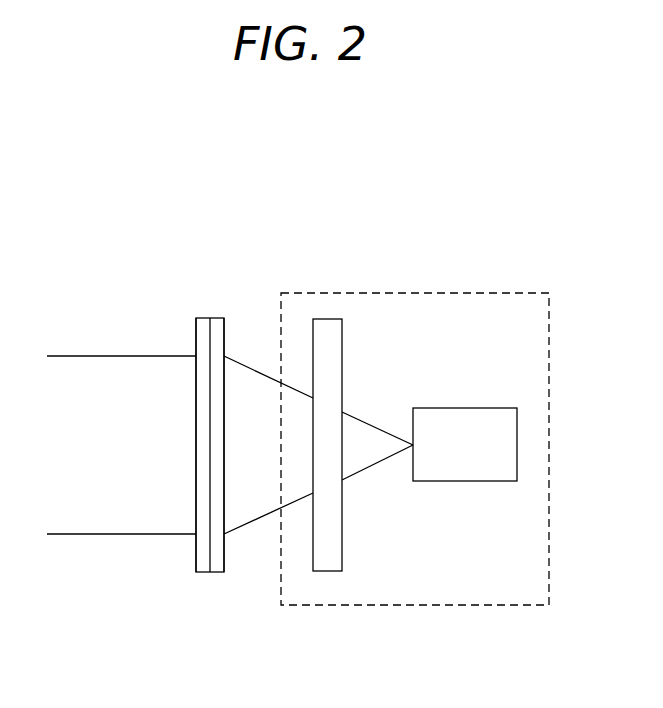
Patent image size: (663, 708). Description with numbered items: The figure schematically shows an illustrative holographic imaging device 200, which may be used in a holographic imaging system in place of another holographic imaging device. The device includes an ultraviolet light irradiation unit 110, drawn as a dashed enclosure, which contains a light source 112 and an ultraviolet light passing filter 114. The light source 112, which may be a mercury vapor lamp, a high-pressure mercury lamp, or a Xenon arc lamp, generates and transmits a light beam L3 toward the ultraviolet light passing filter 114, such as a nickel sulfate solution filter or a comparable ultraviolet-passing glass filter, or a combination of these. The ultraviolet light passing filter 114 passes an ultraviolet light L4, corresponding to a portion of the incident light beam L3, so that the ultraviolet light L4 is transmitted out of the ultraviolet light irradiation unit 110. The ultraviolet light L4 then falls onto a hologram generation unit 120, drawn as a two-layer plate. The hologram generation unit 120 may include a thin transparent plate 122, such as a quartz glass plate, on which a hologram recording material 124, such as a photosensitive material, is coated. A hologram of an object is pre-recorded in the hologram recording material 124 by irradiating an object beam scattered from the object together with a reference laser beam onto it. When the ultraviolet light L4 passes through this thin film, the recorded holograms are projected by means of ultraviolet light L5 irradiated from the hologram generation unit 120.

The holographic imaging device 200 is at (470, 166).
The ultraviolet light irradiation unit 110 is at (495, 292).
The light source 112 is at (473, 483).
The ultraviolet light passing filter 114 is at (342, 360).
The hologram generation unit 120 is at (188, 306).
The thin transparent plate 122 is at (205, 568).
The hologram recording material 124 is at (215, 568).
The light beam L3 is at (377, 465).
The ultraviolet light L4 is at (251, 362).
The ultraviolet light L5 is at (100, 355).